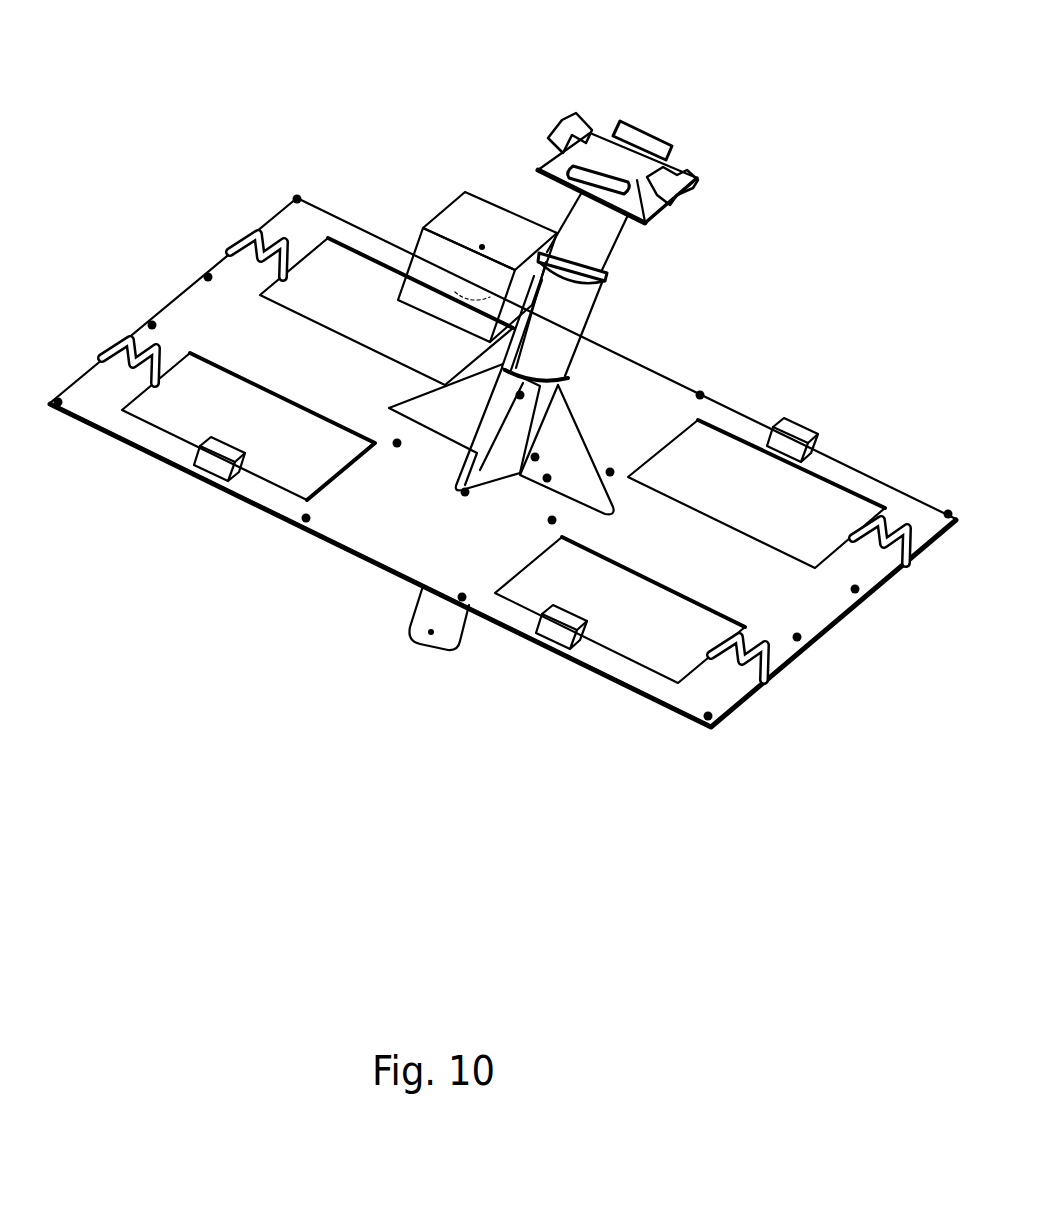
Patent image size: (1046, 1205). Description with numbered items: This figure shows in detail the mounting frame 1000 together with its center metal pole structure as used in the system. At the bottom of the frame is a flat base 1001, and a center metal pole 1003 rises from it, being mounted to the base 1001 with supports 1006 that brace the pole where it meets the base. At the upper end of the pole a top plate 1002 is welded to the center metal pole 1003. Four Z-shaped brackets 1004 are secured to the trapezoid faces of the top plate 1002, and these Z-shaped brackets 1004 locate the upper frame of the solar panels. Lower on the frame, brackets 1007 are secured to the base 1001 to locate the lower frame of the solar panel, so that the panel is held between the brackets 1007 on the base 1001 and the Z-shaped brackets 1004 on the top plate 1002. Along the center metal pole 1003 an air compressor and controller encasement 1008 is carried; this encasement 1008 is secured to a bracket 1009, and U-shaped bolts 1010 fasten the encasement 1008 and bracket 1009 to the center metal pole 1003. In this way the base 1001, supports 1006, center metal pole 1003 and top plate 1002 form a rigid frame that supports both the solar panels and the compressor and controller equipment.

The mounting frame 1000 is at (506, 75).
The base 1001 is at (875, 476).
The top plate 1002 is at (635, 162).
The center metal pole 1003 is at (568, 315).
The Z-shaped bracket 1004 is at (700, 178).
The support 1006 is at (590, 430).
The bracket 1007 is at (205, 470).
The air compressor and controller encasement 1008 is at (433, 247).
The bracket 1009 is at (533, 280).
The U-shaped bolt 1010 is at (570, 363).